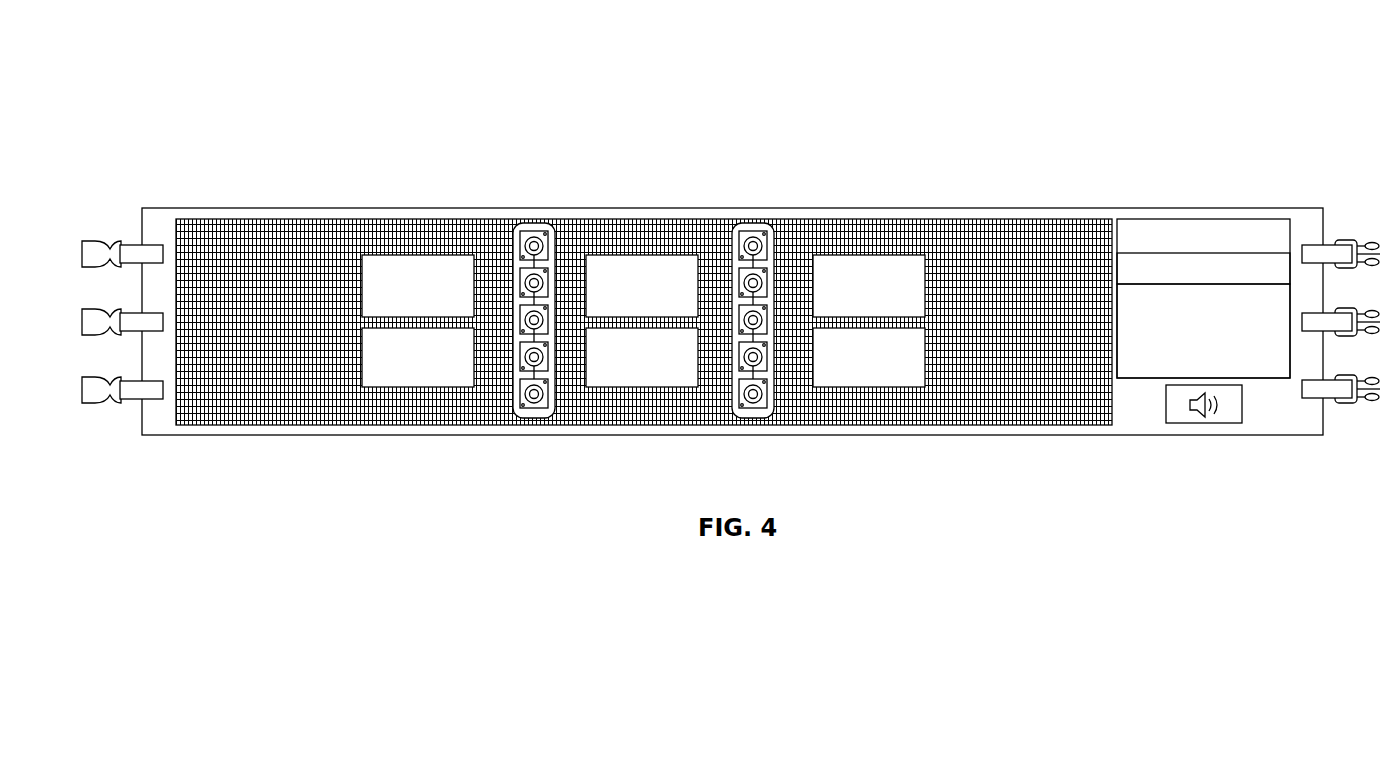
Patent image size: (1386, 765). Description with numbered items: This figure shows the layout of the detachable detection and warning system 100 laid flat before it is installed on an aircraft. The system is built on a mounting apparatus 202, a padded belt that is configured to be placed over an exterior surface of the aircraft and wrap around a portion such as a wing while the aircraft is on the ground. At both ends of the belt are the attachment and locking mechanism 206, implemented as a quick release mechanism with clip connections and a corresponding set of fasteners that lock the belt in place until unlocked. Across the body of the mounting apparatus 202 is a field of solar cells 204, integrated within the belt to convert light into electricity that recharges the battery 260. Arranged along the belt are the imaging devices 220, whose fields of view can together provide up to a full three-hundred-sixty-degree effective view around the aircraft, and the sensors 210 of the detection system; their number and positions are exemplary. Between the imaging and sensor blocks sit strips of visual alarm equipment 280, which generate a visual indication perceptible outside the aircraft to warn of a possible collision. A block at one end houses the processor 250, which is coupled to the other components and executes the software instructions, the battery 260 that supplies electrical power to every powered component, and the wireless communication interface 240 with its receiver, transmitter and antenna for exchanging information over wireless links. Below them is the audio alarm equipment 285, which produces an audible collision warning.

The detachable detection and warning system 100 is at (155, 109).
The mounting apparatus 202 is at (303, 215).
The solar cells 204 is at (240, 246).
The attachment and locking mechanism 206 is at (100, 242).
The sensors 210 is at (418, 387).
The imaging devices 220 is at (427, 256).
The wireless communication interface 240 is at (1291, 338).
The processor 250 is at (1251, 268).
The battery 260 is at (1291, 270).
The visual alarm equipment 280 is at (536, 226).
The audio alarm equipment 285 is at (1203, 424).